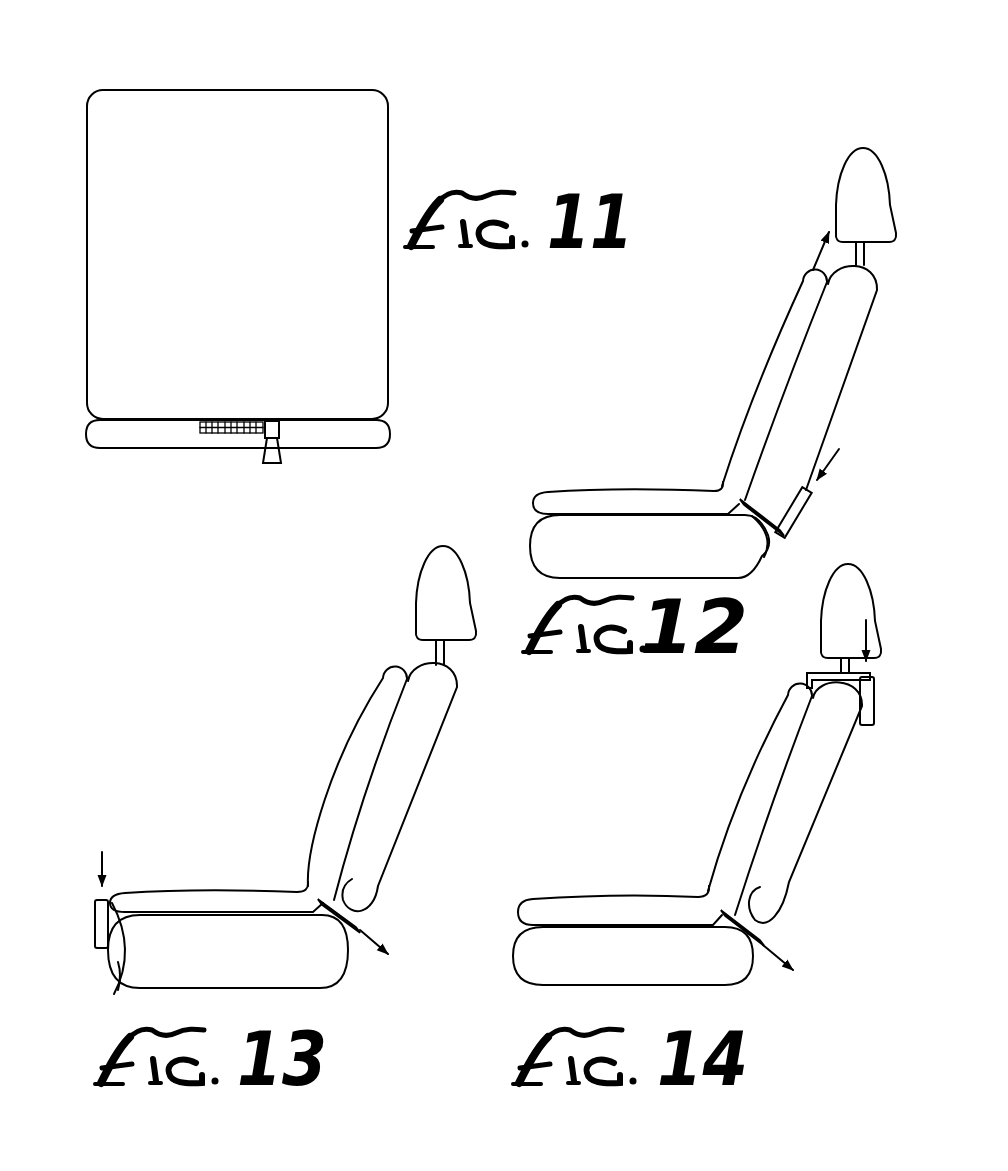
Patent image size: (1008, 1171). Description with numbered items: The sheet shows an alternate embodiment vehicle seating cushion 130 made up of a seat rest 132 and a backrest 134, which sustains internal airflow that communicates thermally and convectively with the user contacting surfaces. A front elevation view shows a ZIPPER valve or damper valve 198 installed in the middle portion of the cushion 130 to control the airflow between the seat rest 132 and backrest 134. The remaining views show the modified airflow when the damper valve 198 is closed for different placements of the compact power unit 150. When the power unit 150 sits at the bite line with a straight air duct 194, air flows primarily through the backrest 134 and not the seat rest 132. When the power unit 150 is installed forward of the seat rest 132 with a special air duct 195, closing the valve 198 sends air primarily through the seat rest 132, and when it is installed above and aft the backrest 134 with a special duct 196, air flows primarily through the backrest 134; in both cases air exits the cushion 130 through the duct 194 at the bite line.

In FIG. 11, the cushion 130 is at (248, 86).
In FIG. 12, the cushion 130 is at (781, 310).
In FIG. 13, the cushion 130 is at (344, 750).
In FIG. 14, the cushion 130 is at (746, 761).
In FIG. 11, the seat rest 132 is at (143, 449).
In FIG. 12, the seat rest 132 is at (634, 483).
In FIG. 13, the seat rest 132 is at (155, 888).
In FIG. 14, the seat rest 132 is at (571, 897).
In FIG. 11, the backrest 134 is at (86, 197).
In FIG. 12, the backrest 134 is at (752, 399).
In FIG. 13, the backrest 134 is at (327, 805).
In FIG. 14, the backrest 134 is at (730, 825).
In FIG. 12, the power unit 150 is at (824, 497).
In FIG. 13, the power unit 150 is at (89, 927).
In FIG. 14, the power unit 150 is at (878, 704).
In FIG. 12, the air duct 194 is at (770, 555).
In FIG. 13, the air duct 194 is at (352, 879).
In FIG. 14, the air duct 194 is at (760, 887).
In FIG. 13, the special air duct 195 is at (120, 975).
In FIG. 14, the special duct 196 is at (806, 673).
In FIG. 11, the damper valve 198 is at (270, 464).